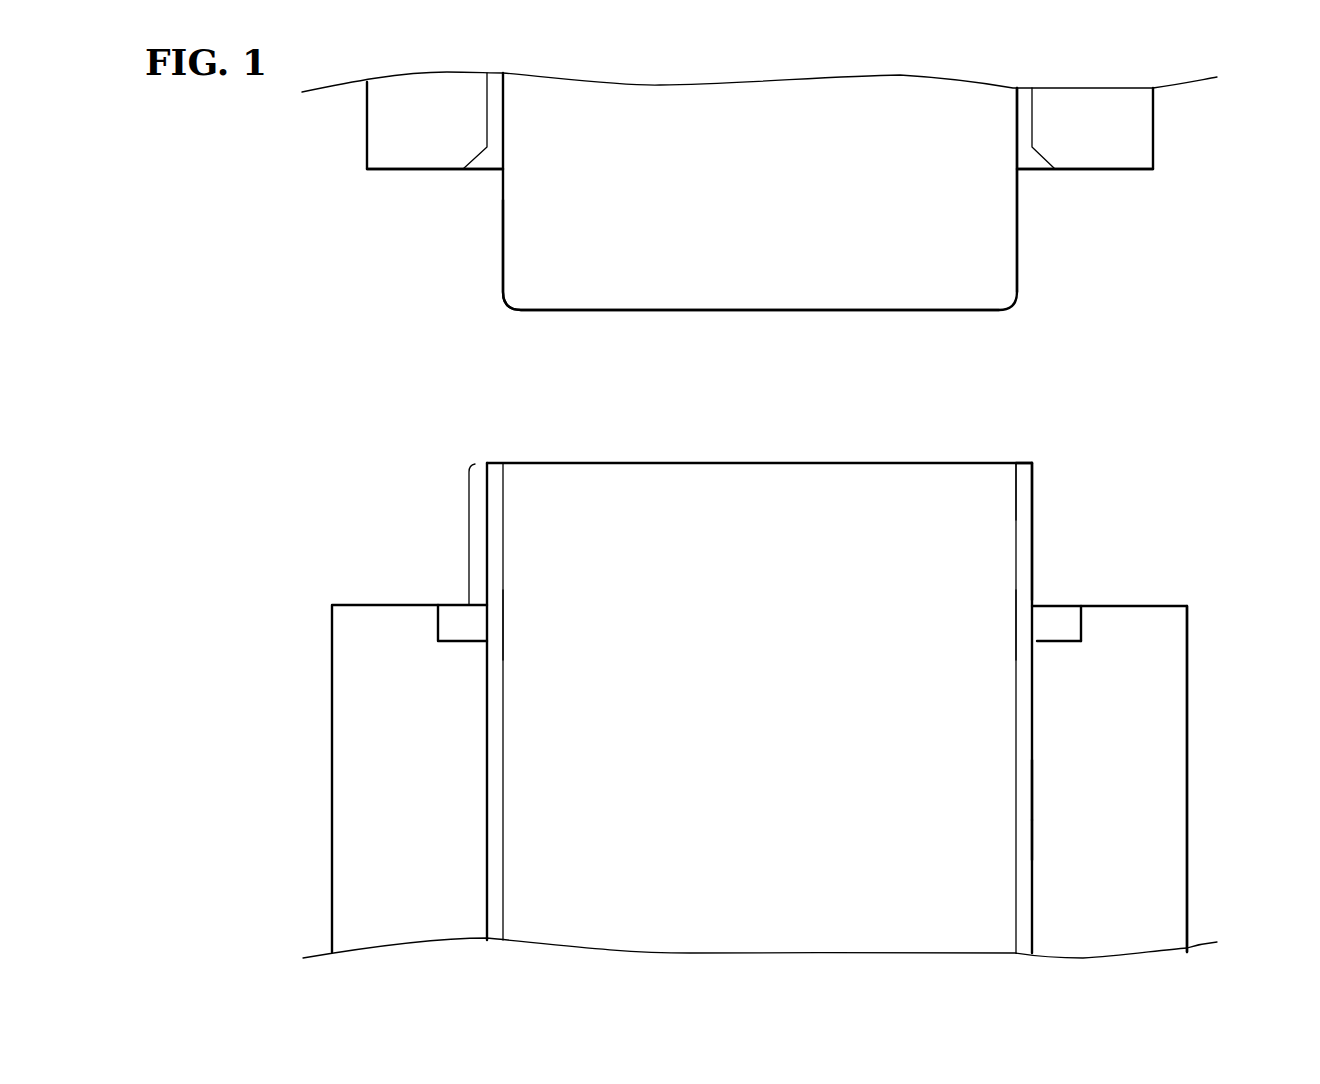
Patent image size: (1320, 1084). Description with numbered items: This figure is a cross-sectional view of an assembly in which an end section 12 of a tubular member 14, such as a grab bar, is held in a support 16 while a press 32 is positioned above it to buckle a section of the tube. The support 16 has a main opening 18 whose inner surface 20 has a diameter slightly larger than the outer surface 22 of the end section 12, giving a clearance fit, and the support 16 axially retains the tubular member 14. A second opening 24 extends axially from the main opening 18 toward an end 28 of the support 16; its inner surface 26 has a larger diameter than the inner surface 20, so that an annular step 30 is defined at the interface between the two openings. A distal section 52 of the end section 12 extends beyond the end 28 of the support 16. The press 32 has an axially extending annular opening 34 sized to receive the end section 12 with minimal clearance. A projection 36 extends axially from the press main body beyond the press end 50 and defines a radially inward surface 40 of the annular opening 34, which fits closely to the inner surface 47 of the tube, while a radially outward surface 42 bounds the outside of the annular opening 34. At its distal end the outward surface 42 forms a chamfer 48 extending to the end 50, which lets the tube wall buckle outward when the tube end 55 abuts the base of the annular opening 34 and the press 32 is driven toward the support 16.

The end section 12 is at (493, 625).
The tubular member 14 is at (1023, 498).
The support 16 is at (1132, 770).
The main opening 18 is at (1033, 792).
The inner surface 20 is at (1035, 837).
The outer surface 22 is at (1033, 537).
The second opening 24 is at (1082, 622).
The inner surface 26 is at (437, 623).
The end 28 is at (1147, 605).
The annular step 30 is at (1060, 643).
The press 32 is at (1027, 247).
The annular opening 34 is at (493, 112).
The projection 36 is at (538, 260).
The radially inward surface 40 is at (1016, 103).
The radially outward surface 42 is at (1032, 102).
The inner surface 47 is at (1015, 487).
The chamfer 48 is at (490, 170).
The end 50 is at (408, 170).
The distal section 52 is at (470, 528).
The end 55 is at (1022, 463).